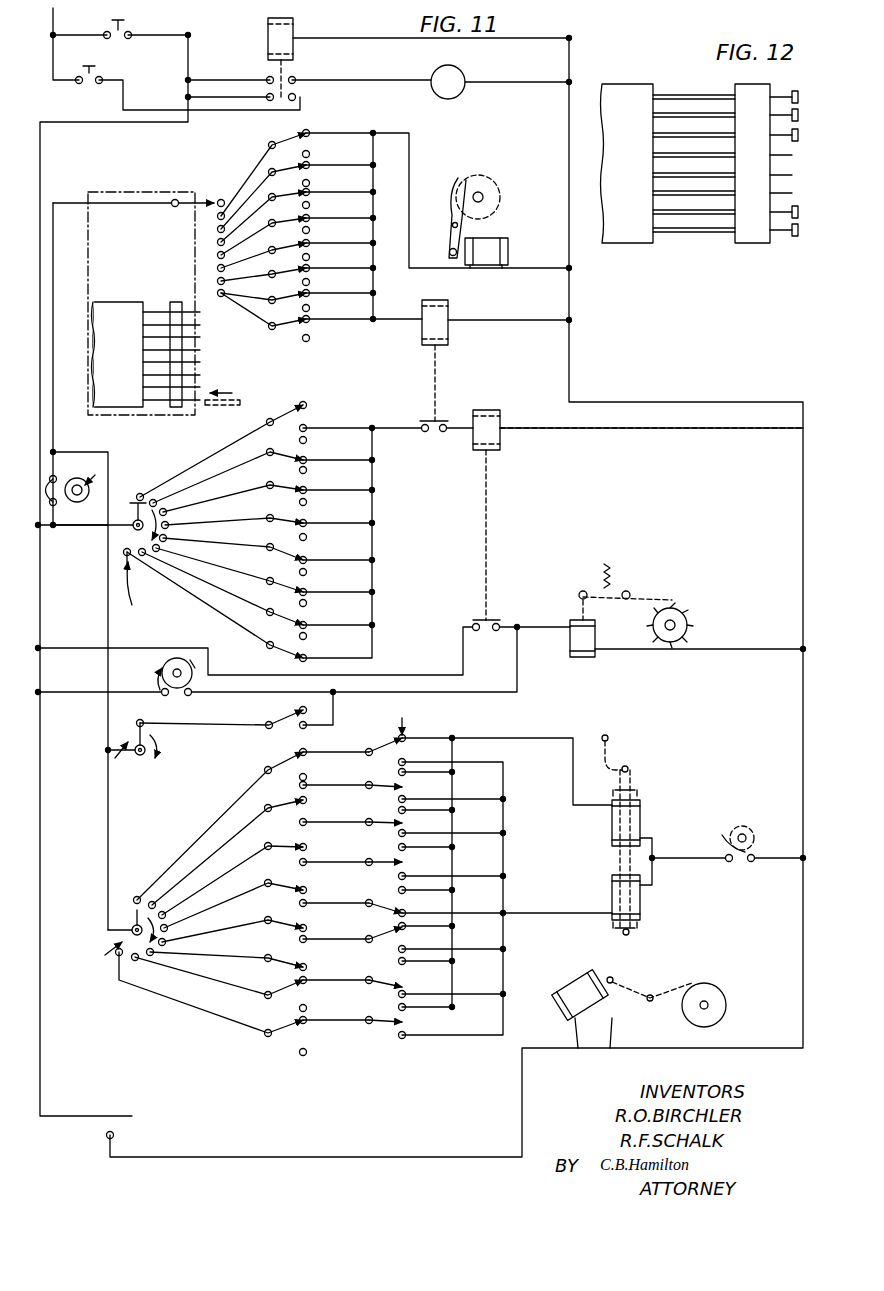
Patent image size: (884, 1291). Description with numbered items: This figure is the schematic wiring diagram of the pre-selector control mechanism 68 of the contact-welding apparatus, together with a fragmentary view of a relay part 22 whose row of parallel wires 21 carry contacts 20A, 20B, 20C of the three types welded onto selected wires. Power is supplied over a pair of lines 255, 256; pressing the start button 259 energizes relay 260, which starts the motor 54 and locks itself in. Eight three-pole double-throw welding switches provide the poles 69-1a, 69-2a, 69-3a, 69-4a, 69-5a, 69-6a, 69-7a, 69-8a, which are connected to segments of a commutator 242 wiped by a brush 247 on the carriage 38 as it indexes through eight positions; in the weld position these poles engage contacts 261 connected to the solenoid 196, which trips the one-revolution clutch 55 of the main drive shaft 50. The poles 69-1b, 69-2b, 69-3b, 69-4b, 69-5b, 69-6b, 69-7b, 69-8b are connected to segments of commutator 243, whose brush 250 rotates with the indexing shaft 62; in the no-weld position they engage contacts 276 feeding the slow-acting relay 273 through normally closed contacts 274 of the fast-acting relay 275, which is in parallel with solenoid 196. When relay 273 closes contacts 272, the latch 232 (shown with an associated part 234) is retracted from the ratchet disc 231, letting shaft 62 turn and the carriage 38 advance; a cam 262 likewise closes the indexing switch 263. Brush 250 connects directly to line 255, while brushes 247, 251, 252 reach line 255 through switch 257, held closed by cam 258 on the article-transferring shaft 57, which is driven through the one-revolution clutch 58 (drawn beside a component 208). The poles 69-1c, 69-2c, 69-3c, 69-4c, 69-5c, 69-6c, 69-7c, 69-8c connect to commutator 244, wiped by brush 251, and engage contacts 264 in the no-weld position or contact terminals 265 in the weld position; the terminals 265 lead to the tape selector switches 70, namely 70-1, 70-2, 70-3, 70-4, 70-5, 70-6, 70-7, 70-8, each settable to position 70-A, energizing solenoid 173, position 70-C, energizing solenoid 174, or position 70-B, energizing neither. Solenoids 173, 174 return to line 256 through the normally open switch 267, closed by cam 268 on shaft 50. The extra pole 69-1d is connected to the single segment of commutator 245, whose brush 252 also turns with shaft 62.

In FIG. 11, the line 255 is at (53, 22).
In FIG. 11, the line 256 is at (569, 24).
In FIG. 11, the start button 259 is at (132, 32).
In FIG. 11, the relay 260 is at (293, 48).
In FIG. 11, the motor 54 is at (460, 76).
In FIG. 11, the pre-selector control mechanism 68 is at (585, 75).
In FIG. 11, the carriage 38 is at (190, 192).
In FIG. 11, the relay part or article 22 is at (137, 300).
In FIG. 12, the relay part or article 22 is at (660, 248).
In FIG. 12, the wires 21 is at (780, 245).
In FIG. 12, the terminal 20A is at (809, 164).
In FIG. 12, the terminal 20B is at (810, 230).
In FIG. 12, the terminal 20C is at (810, 116).
In FIG. 11, the brush 247 is at (190, 203).
In FIG. 11, the commutator 242 is at (226, 195).
In FIG. 11, the contacts 261 is at (314, 130).
In FIG. 11, the switch pole 69-1a is at (298, 132).
In FIG. 11, the switch pole 69-2a is at (265, 196).
In FIG. 11, the switch pole 69-3a is at (265, 211).
In FIG. 11, the switch pole 69-4a is at (265, 235).
In FIG. 11, the switch pole 69-5a is at (265, 254).
In FIG. 11, the switch pole 69-6a is at (265, 275).
In FIG. 11, the switch pole 69-7a is at (265, 301).
In FIG. 11, the switch pole 69-8a is at (288, 328).
In FIG. 11, the main drive shaft 50 is at (483, 192).
In FIG. 11, the one-revolution clutch 55 is at (497, 210).
In FIG. 11, the solenoid 196 is at (508, 244).
In FIG. 11, the fast-acting relay 275 is at (445, 335).
In FIG. 11, the normally closed contacts 274 is at (425, 434).
In FIG. 11, the slow-acting relay 273 is at (500, 440).
In FIG. 11, the cam 258 is at (79, 690).
In FIG. 11, the article transferring shaft 57 is at (98, 472).
In FIG. 11, the switch 257 is at (67, 503).
In FIG. 11, the brush 250 is at (133, 512).
In FIG. 11, the indexing shaft 62 is at (130, 530).
In FIG. 11, the commutator 243 is at (130, 581).
In FIG. 11, the contacts 276 is at (310, 425).
In FIG. 11, the switch pole 69-1b is at (278, 655).
In FIG. 11, the switch pole 69-2b is at (264, 426).
In FIG. 11, the switch pole 69-3b is at (278, 462).
In FIG. 11, the switch pole 69-4b is at (270, 493).
In FIG. 11, the switch pole 69-5b is at (268, 524).
In FIG. 11, the switch pole 69-6b is at (278, 550).
In FIG. 11, the switch pole 69-7b is at (230, 570).
In FIG. 11, the switch pole 69-8b is at (276, 611).
In FIG. 11, the tape selector switches 70 is at (242, 397).
In FIG. 11, the normally open contacts 272 is at (486, 634).
In FIG. 11, the commutator 245 is at (572, 652).
In FIG. 11, the latch 232 is at (632, 592).
In FIG. 11, the spring 234 is at (612, 562).
In FIG. 11, the ratchet disc 231 is at (688, 618).
In FIG. 11, the indexing switch 263 is at (178, 694).
In FIG. 11, the cam 262 is at (195, 668).
In FIG. 11, the brush 252 is at (132, 748).
In FIG. 11, the switch pole 69-1d is at (276, 728).
In FIG. 11, the brush 251 is at (132, 905).
In FIG. 11, the commutator 244 is at (96, 961).
In FIG. 11, the switch pole 69-1c is at (211, 1002).
In FIG. 11, the switch pole 69-2c is at (220, 825).
In FIG. 11, the switch pole 69-3c is at (238, 842).
In FIG. 11, the switch pole 69-4c is at (268, 840).
In FIG. 11, the switch pole 69-5c is at (234, 895).
In FIG. 11, the switch pole 69-6c is at (233, 926).
In FIG. 11, the switch pole 69-7c is at (227, 957).
In FIG. 11, the switch pole 69-8c is at (219, 985).
In FIG. 11, the contacts 264 is at (328, 1066).
In FIG. 11, the contact terminals 265 is at (336, 878).
In FIG. 11, the tape selector switch 70-1 is at (377, 1026).
In FIG. 11, the tape selector switch 70-2 is at (375, 748).
In FIG. 11, the tape selector switch 70-3 is at (374, 786).
In FIG. 11, the tape selector switch 70-4 is at (374, 824).
In FIG. 11, the tape selector switch 70-5 is at (377, 862).
In FIG. 11, the tape selector switch 70-6 is at (375, 904).
In FIG. 11, the tape selector switch 70-7 is at (375, 941).
In FIG. 11, the tape selector switch 70-8 is at (374, 978).
In FIG. 11, the switch position 70-A is at (507, 873).
In FIG. 11, the switch position 70-B is at (507, 898).
In FIG. 11, the switch position 70-C is at (398, 873).
In FIG. 11, the solenoid 173 is at (640, 814).
In FIG. 11, the solenoid 174 is at (640, 900).
In FIG. 11, the cam 268 is at (752, 838).
In FIG. 11, the normally open switch 267 is at (738, 862).
In FIG. 11, the solenoid 208 is at (575, 990).
In FIG. 11, the one-revolution clutch 58 is at (730, 995).